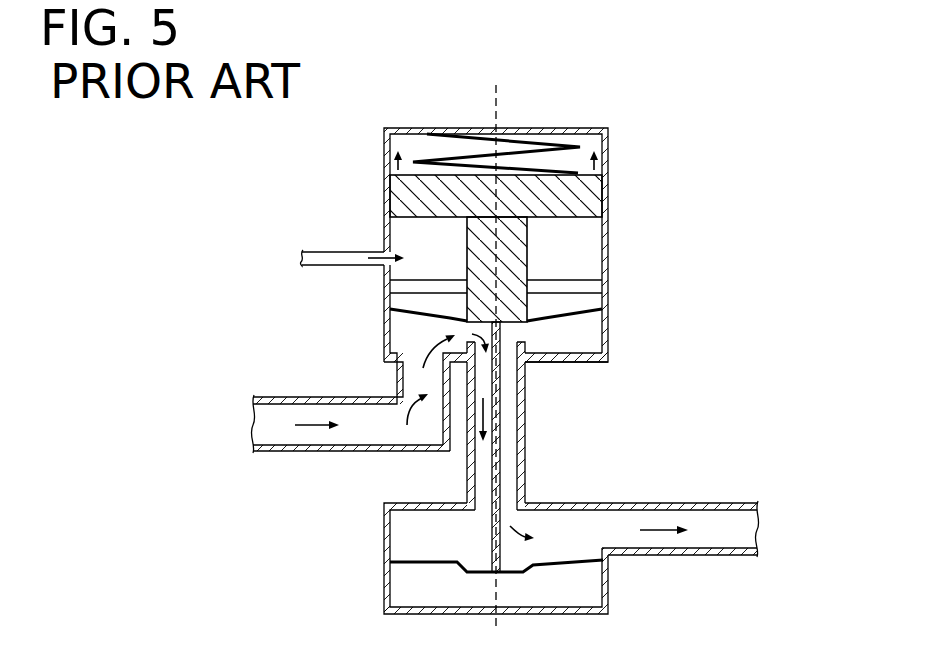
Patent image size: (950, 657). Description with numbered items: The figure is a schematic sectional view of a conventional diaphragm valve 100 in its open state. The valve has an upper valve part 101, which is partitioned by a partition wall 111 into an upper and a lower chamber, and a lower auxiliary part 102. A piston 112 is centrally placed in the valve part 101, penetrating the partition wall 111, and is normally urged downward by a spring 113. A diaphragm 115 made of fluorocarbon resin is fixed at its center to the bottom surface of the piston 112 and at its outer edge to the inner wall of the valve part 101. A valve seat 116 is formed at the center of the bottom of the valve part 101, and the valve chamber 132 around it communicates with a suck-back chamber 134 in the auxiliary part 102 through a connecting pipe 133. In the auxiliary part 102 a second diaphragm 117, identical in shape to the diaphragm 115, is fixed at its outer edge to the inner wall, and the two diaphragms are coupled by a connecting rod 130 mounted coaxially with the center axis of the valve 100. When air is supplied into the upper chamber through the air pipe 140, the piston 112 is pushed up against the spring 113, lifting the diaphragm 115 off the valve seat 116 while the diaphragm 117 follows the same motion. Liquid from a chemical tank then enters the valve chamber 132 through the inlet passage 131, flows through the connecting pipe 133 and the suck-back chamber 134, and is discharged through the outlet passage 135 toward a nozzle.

The diaphragm valve 100 is at (603, 112).
The valve part 101 is at (609, 147).
The auxiliary part 102 is at (384, 598).
The partition wall 111 is at (596, 288).
The piston 112 is at (511, 261).
The spring 113 is at (457, 133).
The diaphragm 115 is at (584, 316).
The valve seat 116 is at (528, 348).
The diaphragm 117 is at (570, 566).
The connecting rod 130 is at (500, 468).
The inlet passage 131 is at (311, 397).
The valve chamber 132 is at (582, 337).
The connecting pipe 133 is at (526, 422).
The suck-back chamber 134 is at (588, 520).
The outlet passage 135 is at (726, 556).
The air pipe 140 is at (337, 252).